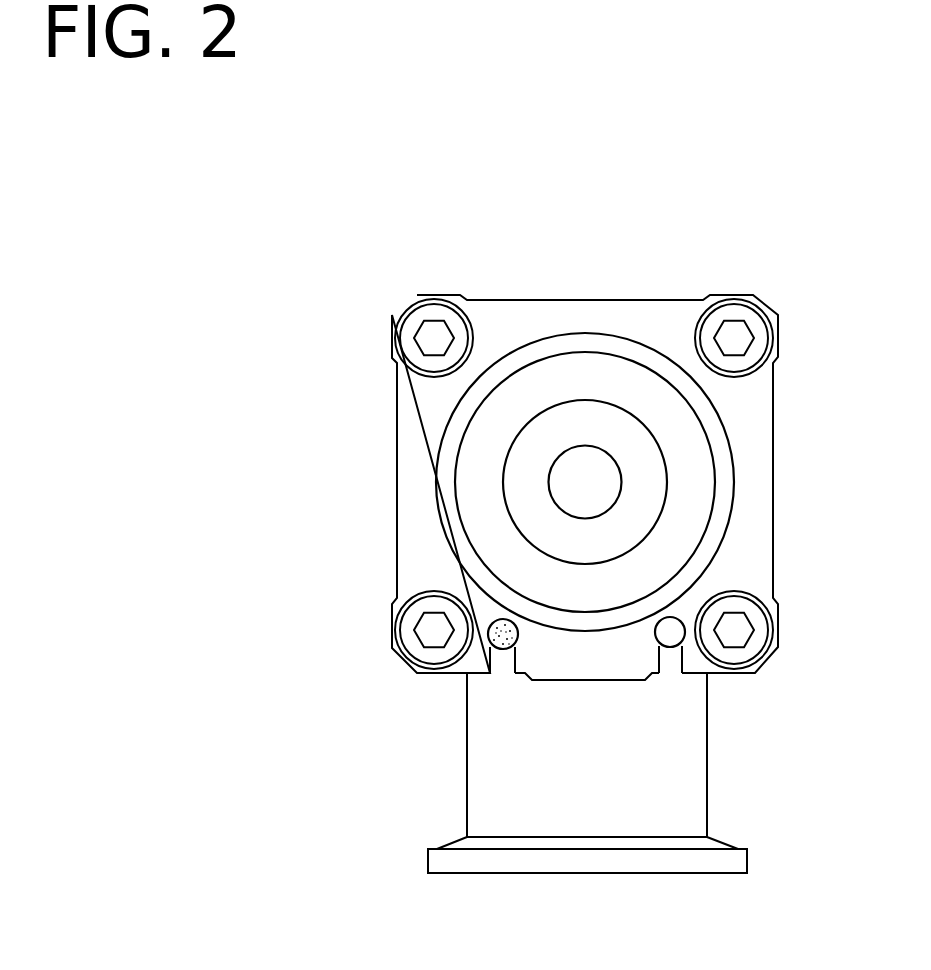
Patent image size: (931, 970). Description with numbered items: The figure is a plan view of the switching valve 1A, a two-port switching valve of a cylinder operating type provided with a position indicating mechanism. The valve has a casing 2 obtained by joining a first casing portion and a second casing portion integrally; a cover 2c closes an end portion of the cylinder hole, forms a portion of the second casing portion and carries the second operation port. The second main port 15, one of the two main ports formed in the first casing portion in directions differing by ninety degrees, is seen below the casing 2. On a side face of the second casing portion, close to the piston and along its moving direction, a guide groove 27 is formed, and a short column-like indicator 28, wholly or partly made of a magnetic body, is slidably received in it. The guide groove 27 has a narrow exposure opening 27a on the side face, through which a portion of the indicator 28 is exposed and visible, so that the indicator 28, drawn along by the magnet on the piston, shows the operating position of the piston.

The switching valve 1A is at (695, 257).
The casing 2 is at (390, 393).
The cover 2c is at (418, 452).
The guide groove 27 is at (498, 620).
The exposure opening 27a is at (503, 658).
The indicator 28 is at (487, 638).
The second main port 15 is at (603, 862).